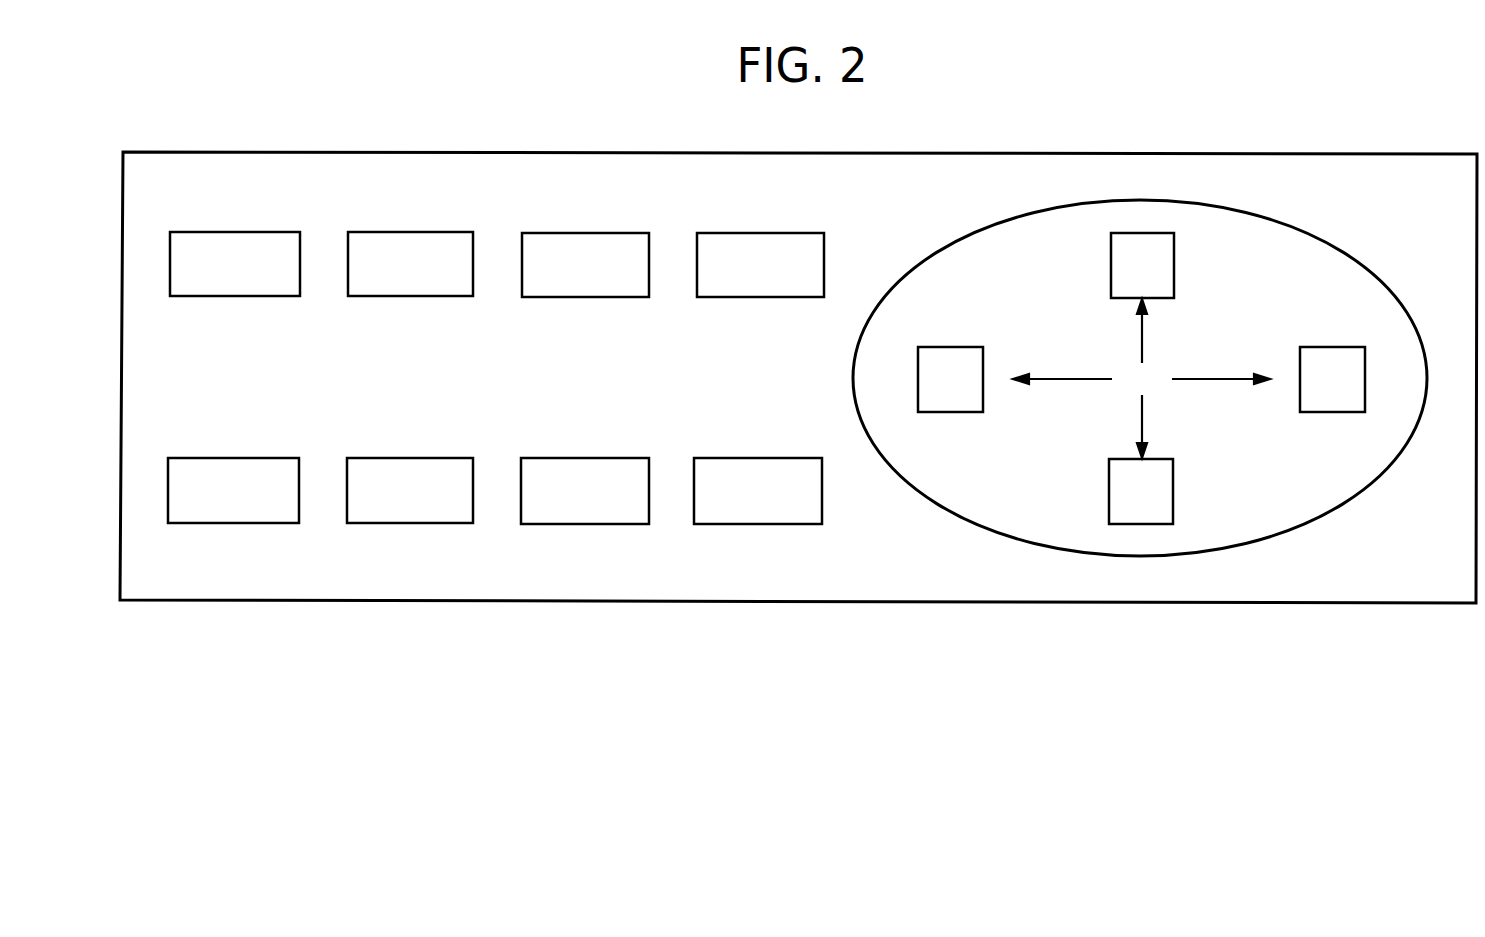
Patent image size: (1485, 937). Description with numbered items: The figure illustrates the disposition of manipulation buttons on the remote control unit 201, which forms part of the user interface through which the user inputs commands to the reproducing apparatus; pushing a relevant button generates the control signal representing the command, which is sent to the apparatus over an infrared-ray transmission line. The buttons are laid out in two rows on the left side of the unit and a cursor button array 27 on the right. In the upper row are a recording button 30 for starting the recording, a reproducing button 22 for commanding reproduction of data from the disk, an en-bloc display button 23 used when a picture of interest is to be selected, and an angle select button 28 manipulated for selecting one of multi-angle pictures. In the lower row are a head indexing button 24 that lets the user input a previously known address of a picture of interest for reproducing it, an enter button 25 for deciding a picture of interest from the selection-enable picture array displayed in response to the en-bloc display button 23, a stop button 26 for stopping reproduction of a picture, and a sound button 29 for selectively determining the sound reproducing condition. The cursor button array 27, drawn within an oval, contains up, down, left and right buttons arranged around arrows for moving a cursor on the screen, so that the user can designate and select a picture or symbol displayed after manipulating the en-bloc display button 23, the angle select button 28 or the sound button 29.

The remote control unit 201 is at (1270, 153).
The recording button 30 is at (237, 232).
The reproducing button 22 is at (412, 232).
The en-bloc display button 23 is at (587, 233).
The angle select button 28 is at (762, 233).
The head indexing button 24 is at (237, 458).
The enter button 25 is at (412, 458).
The stop button 26 is at (587, 458).
The sound button 29 is at (760, 458).
The cursor button array 27 is at (1307, 232).